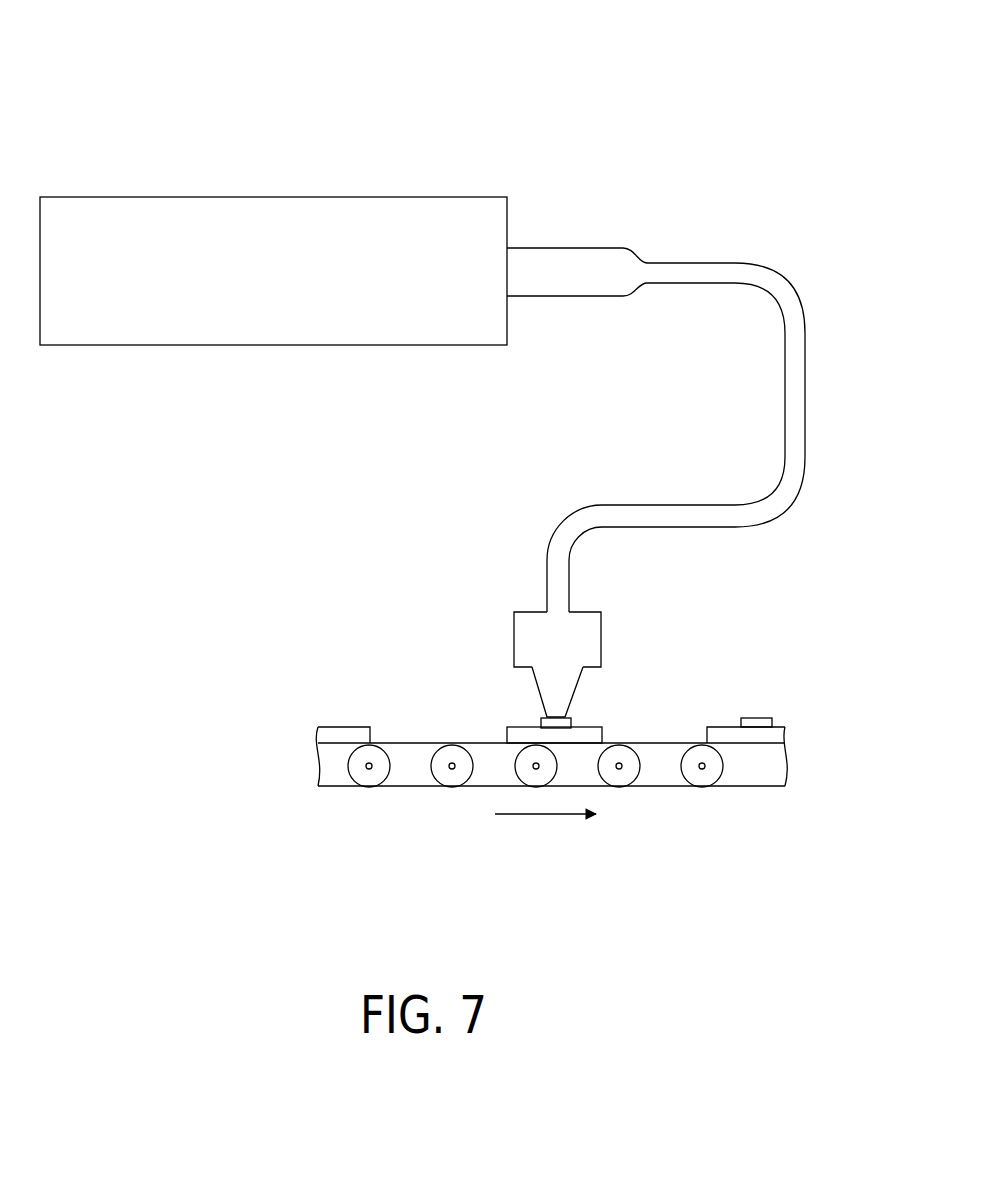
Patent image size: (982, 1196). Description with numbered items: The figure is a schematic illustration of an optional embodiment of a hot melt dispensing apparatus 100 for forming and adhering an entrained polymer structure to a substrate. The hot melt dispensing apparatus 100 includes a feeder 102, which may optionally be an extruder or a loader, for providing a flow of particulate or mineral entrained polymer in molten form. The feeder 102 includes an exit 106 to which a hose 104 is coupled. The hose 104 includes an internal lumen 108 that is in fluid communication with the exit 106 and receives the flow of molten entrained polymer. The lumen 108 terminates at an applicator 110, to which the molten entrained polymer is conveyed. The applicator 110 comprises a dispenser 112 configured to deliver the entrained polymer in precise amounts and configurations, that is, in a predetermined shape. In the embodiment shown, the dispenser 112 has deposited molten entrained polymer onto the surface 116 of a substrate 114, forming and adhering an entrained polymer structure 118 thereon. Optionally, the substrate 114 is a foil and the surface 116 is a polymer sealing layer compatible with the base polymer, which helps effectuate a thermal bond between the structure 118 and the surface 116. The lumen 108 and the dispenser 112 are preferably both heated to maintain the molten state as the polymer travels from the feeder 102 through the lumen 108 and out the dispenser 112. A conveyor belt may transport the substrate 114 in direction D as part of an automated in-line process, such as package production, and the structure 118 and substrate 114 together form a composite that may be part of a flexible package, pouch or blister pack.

The hot melt dispensing apparatus 100 is at (644, 140).
The feeder 102 is at (190, 237).
The hose 104 is at (797, 321).
The exit 106 is at (647, 263).
The lumen 108 is at (783, 467).
The applicator 110 is at (577, 625).
The dispenser 112 is at (560, 695).
The substrate 114 is at (578, 737).
The surface 116 is at (513, 722).
The entrained polymer structure 118 is at (562, 723).